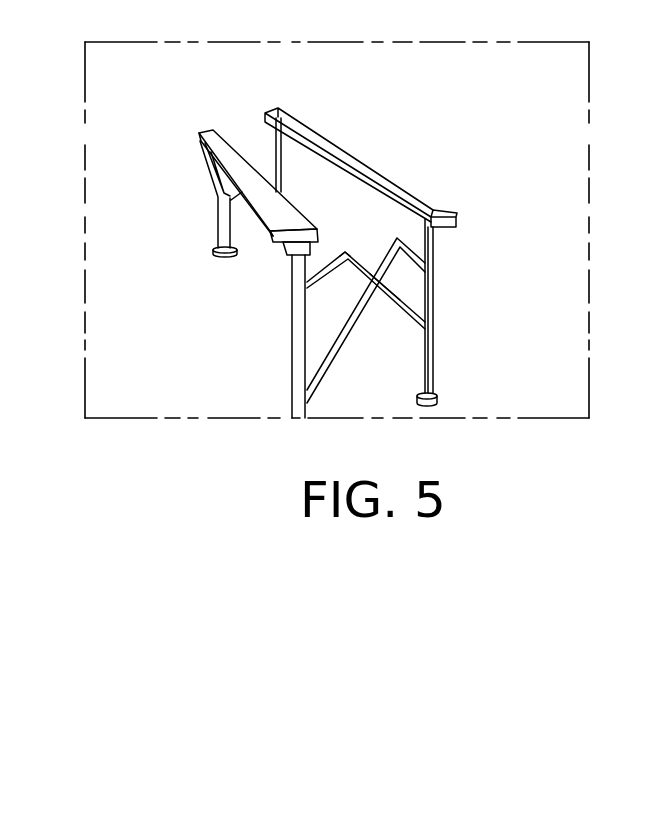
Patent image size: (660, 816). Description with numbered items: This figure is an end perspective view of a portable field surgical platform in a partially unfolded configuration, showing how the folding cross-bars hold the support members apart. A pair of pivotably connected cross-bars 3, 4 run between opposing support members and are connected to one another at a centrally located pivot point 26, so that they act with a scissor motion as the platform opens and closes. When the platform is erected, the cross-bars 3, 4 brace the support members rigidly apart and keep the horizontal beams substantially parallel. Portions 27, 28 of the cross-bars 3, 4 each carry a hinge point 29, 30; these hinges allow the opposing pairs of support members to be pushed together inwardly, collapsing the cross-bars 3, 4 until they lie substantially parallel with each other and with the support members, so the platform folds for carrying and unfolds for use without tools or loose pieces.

The cross-bar 3 is at (418, 333).
The cross-bar 4 is at (344, 334).
The pivot point 26 is at (380, 277).
The portion of cross-bar 27 is at (338, 244).
The portion of cross-bar 28 is at (413, 256).
The hinge point 29 is at (346, 250).
The hinge point 30 is at (431, 208).